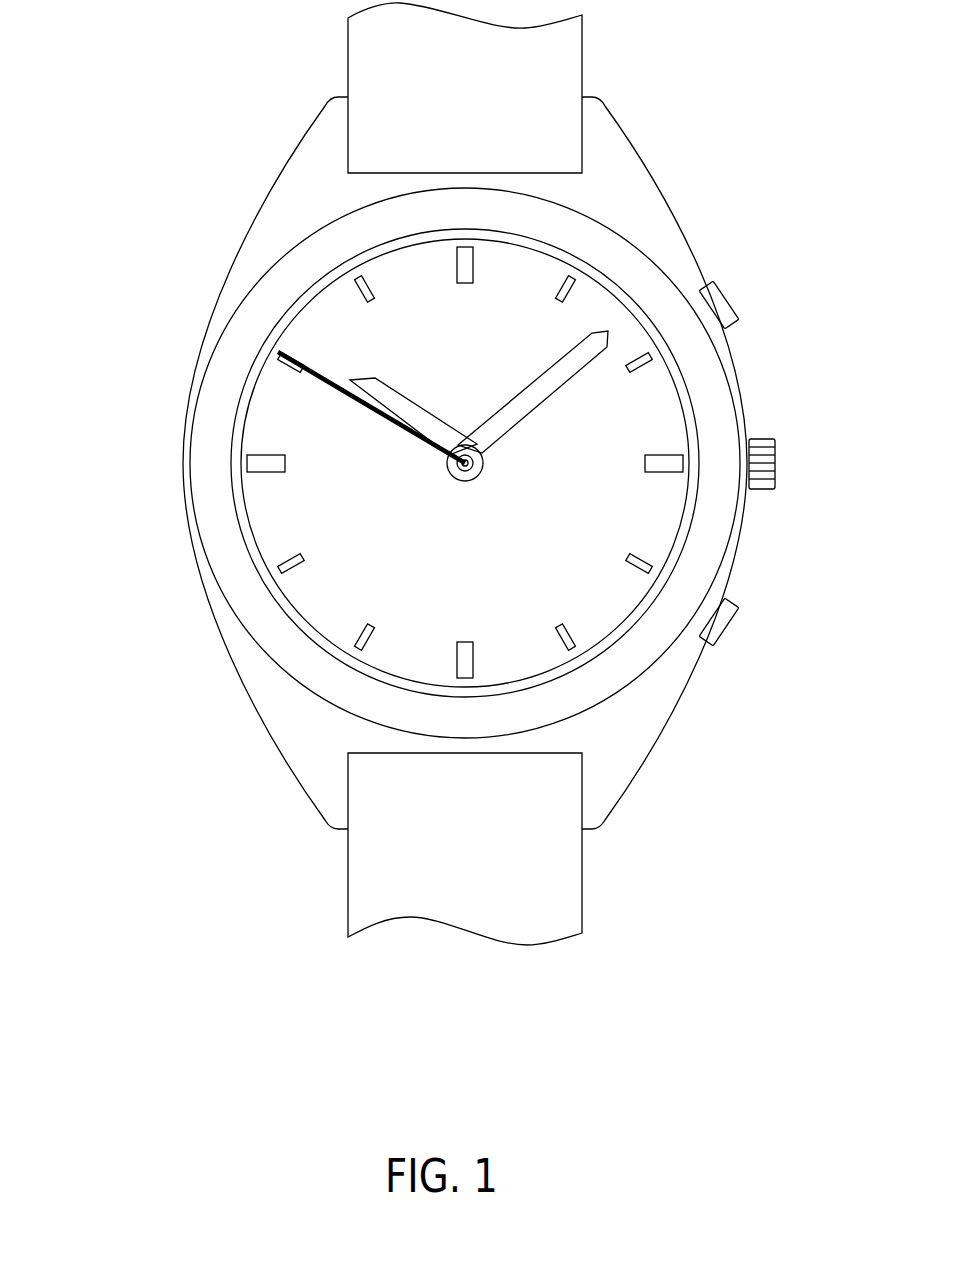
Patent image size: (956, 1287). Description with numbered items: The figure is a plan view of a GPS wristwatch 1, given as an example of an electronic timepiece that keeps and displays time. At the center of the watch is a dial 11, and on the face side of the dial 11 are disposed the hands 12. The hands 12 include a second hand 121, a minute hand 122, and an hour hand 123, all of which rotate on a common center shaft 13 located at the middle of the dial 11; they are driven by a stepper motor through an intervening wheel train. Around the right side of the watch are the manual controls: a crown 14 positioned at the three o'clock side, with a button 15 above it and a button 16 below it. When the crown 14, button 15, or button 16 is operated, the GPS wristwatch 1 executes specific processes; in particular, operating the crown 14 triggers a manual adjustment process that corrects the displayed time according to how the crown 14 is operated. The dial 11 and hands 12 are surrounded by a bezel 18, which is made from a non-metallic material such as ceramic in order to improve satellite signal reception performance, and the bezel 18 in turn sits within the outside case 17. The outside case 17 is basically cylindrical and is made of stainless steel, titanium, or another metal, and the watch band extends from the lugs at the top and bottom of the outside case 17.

The GPS wristwatch 1 is at (444, 474).
The dial 11 is at (298, 521).
The hands 12 is at (325, 395).
The second hand 121 is at (340, 397).
The minute hand 122 is at (528, 412).
The hour hand 123 is at (340, 397).
The center shaft 13 is at (461, 446).
The crown 14 is at (765, 461).
The button 15 is at (725, 303).
The button 16 is at (725, 624).
The outside case 17 is at (640, 735).
The bezel 18 is at (288, 662).